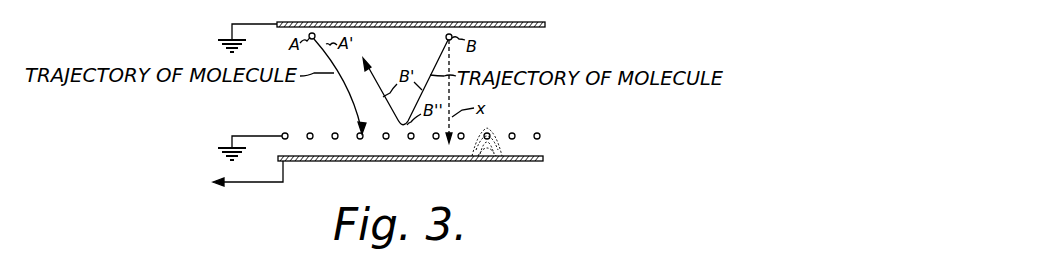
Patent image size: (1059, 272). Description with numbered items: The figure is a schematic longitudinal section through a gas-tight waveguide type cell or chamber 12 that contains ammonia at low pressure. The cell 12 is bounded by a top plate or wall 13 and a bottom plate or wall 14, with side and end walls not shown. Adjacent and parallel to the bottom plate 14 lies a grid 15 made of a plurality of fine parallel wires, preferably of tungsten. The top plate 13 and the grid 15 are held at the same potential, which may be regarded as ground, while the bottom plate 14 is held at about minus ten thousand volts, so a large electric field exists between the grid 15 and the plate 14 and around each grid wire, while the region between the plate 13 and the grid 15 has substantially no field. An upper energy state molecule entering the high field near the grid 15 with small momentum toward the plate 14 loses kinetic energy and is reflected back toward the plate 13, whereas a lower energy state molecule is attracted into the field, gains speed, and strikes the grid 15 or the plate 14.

The waveguide cell 12 is at (345, 105).
The top plate 13 is at (422, 22).
The bottom plate 14 is at (543, 161).
The grid 15 is at (512, 132).